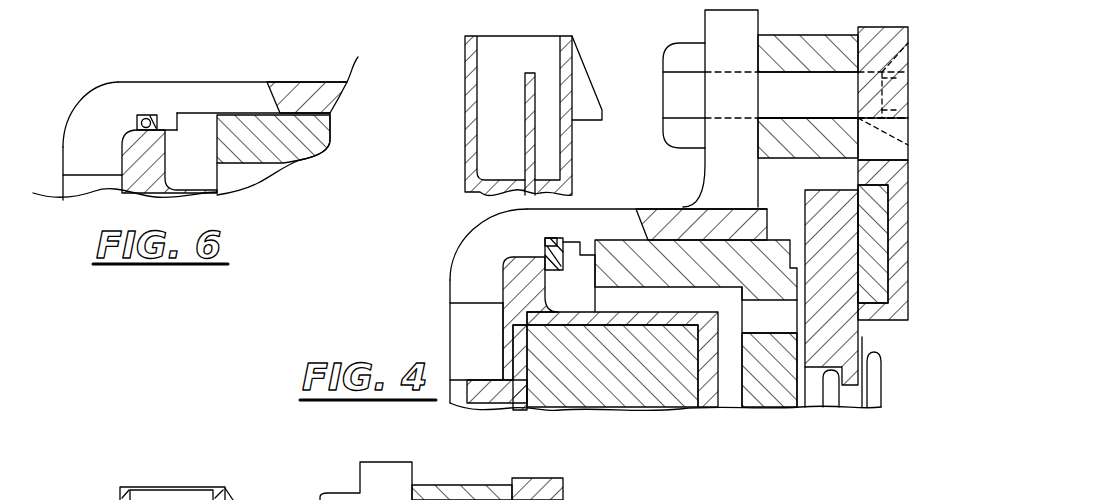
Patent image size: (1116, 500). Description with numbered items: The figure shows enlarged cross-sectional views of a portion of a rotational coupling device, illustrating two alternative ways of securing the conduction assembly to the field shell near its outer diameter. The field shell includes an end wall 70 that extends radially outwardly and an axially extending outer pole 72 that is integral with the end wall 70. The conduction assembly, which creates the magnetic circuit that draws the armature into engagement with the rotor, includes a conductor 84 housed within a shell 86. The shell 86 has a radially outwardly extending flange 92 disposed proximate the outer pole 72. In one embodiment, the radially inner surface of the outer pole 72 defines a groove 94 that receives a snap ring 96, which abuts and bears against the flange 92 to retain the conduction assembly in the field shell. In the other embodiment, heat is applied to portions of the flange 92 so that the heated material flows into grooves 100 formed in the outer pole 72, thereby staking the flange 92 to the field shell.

In FIG. 6, the end wall 70 is at (83, 157).
In FIG. 4, the end wall 70 is at (462, 278).
In FIG. 6, the outer pole 72 is at (253, 97).
In FIG. 4, the outer pole 72 is at (672, 217).
In FIG. 4, the conductor 84 is at (643, 380).
In FIG. 4, the shell 86 is at (712, 397).
In FIG. 6, the flange 92 is at (125, 152).
In FIG. 4, the flange 92 is at (517, 280).
In FIG. 4, the groove 94 is at (563, 240).
In FIG. 4, the snap ring 96 is at (543, 242).
In FIG. 6, the grooves 100 is at (143, 116).